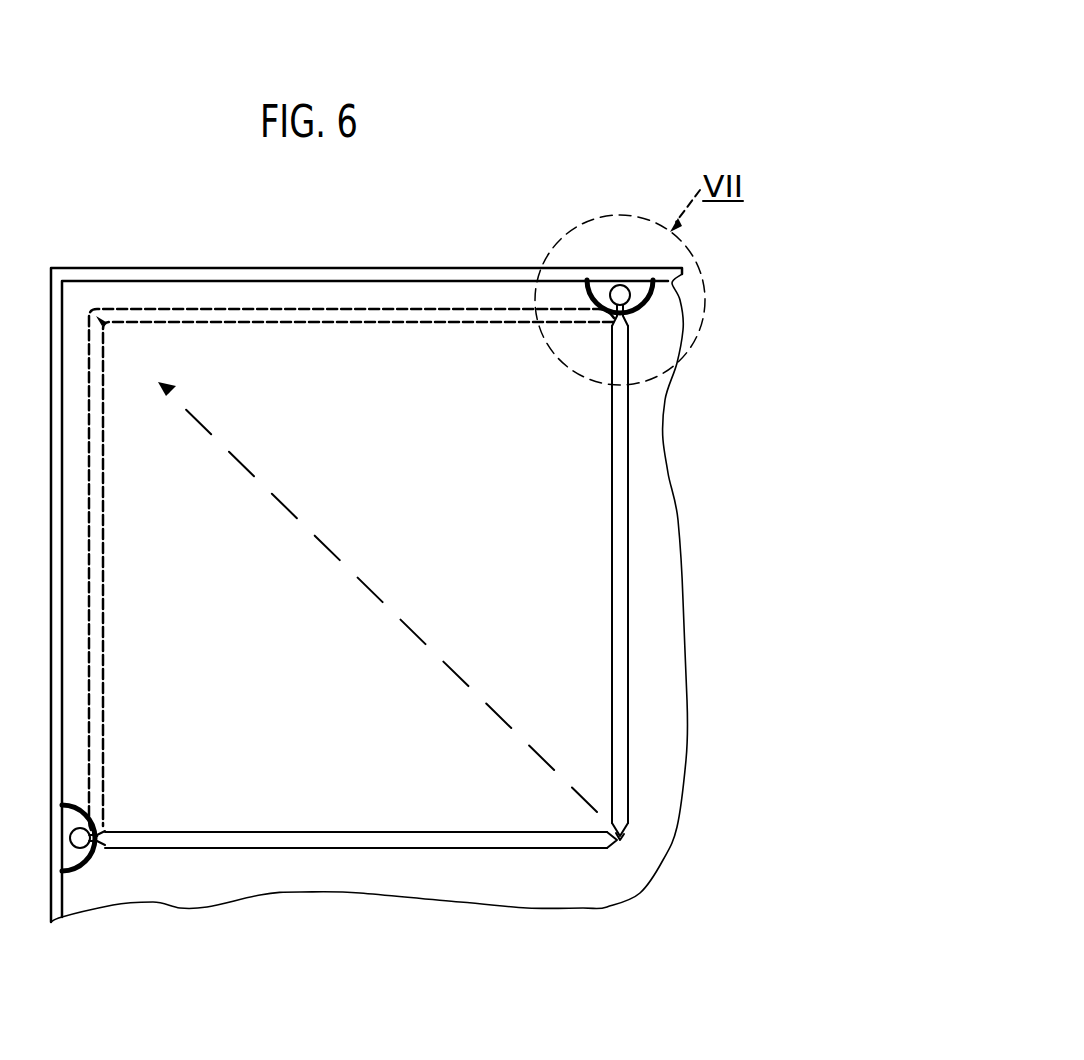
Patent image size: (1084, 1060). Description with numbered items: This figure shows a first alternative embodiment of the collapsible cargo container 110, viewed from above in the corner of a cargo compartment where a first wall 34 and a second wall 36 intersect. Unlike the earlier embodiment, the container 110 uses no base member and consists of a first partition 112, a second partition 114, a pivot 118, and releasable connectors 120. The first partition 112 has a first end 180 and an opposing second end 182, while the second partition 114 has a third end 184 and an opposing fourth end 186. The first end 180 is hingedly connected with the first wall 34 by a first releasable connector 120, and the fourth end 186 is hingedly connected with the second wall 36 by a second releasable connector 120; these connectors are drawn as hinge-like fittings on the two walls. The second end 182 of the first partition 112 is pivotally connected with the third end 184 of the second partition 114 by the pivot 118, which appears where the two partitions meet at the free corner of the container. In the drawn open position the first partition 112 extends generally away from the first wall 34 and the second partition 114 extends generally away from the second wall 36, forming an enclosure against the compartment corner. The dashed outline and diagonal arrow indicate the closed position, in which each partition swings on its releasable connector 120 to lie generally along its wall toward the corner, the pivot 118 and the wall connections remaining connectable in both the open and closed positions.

The collapsible cargo container 110 is at (668, 160).
The second wall 36 is at (667, 285).
The releasable connector 120 is at (620, 264).
The fourth end 186 is at (624, 330).
The second partition 114 is at (623, 468).
The third end 184 is at (622, 815).
The pivot 118 is at (621, 834).
The first partition 112 is at (305, 848).
The second end 182 is at (605, 838).
The first end 180 is at (128, 836).
The first wall 34 is at (64, 888).